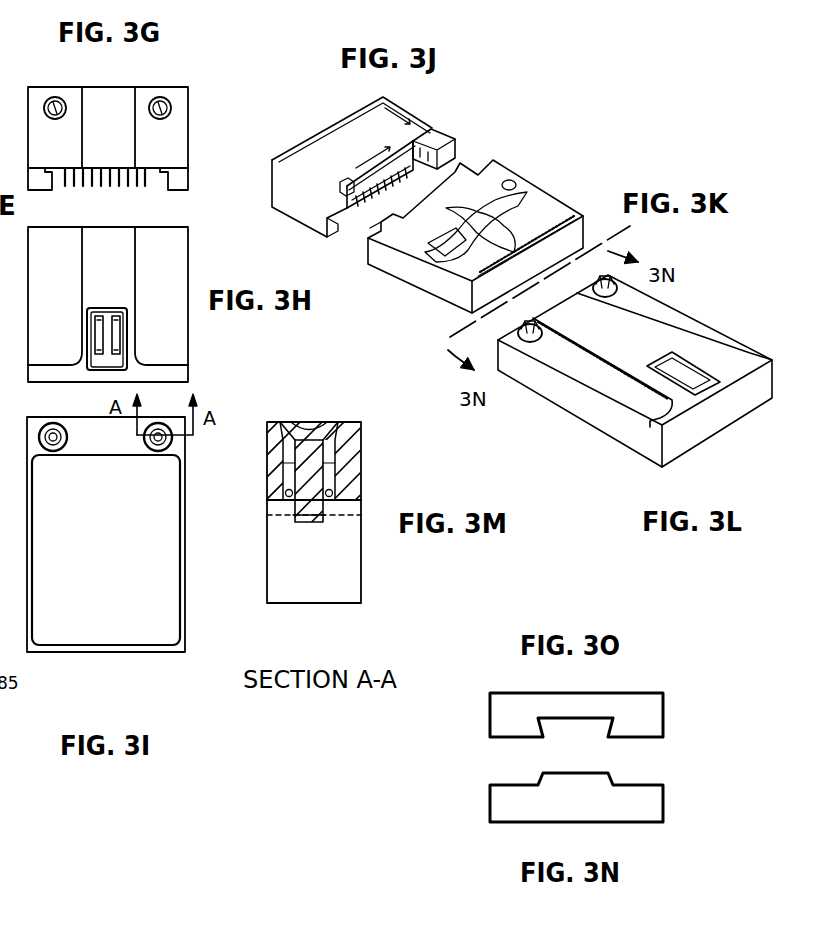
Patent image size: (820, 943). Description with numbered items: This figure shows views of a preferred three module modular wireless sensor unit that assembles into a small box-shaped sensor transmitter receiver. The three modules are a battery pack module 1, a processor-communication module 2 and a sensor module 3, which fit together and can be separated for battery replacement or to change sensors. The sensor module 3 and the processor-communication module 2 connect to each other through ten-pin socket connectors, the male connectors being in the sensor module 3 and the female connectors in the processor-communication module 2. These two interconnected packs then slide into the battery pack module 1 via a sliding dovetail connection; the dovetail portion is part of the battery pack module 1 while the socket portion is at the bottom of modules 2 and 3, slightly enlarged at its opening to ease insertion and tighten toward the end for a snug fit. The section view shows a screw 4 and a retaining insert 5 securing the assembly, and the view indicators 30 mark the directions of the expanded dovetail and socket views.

In FIG. 3L, the battery pack module 1 is at (717, 297).
In FIG. 3K, the processor-communication module 2 is at (529, 150).
In FIG. 3J, the sensor module 3 is at (455, 111).
In FIG. 3M, the screw 4 is at (320, 426).
In FIG. 3M, the retainer insert 5 is at (348, 480).
In FIG. 3K, the view direction indicator 30 is at (590, 208).